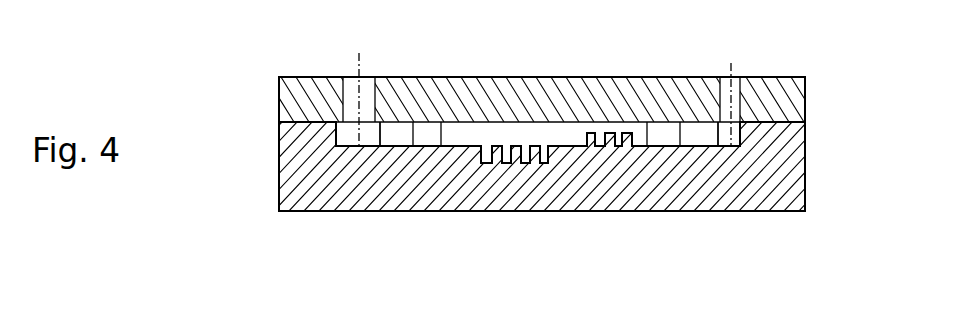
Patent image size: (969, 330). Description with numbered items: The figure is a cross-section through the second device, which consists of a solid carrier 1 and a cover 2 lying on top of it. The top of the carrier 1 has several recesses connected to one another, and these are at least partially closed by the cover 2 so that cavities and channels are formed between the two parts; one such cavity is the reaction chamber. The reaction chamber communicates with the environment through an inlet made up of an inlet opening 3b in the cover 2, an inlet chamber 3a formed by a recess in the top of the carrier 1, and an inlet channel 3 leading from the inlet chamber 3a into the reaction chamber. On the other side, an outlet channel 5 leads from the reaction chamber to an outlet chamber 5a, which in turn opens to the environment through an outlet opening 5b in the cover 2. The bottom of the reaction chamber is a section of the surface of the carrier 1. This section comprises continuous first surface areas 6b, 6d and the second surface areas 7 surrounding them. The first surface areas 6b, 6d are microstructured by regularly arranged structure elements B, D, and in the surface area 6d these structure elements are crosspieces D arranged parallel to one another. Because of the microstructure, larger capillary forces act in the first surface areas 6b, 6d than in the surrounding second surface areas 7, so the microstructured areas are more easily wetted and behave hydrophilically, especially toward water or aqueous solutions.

The carrier 1 is at (807, 158).
The cover 2 is at (807, 96).
The inlet channel 3 is at (397, 138).
The inlet chamber 3a is at (353, 138).
The inlet opening 3b is at (352, 78).
The outlet channel 5 is at (703, 138).
The outlet chamber 5a is at (735, 143).
The outlet opening 5b is at (738, 78).
The first surface area 6b is at (521, 152).
The first surface area 6d is at (593, 147).
The second surface area 7 is at (460, 146).
The structure elements B is at (493, 166).
The crosspieces D is at (614, 152).